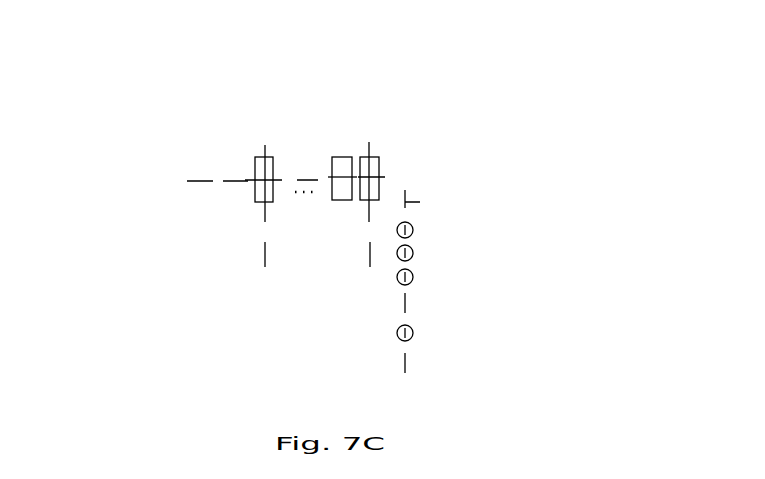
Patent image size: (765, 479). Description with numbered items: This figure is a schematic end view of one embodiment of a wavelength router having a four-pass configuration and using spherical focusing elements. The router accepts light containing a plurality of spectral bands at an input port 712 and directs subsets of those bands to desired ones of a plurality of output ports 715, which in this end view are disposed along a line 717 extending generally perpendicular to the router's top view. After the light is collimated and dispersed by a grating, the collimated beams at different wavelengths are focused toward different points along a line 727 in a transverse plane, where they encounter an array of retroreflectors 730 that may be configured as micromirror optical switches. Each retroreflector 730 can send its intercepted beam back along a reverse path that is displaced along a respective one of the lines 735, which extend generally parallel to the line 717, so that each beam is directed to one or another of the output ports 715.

The input port 712 is at (413, 333).
The output ports 715 is at (413, 230).
The line 717 is at (420, 202).
The line 727 is at (175, 183).
The retroreflectors 730 is at (257, 157).
The lines 735 is at (265, 227).